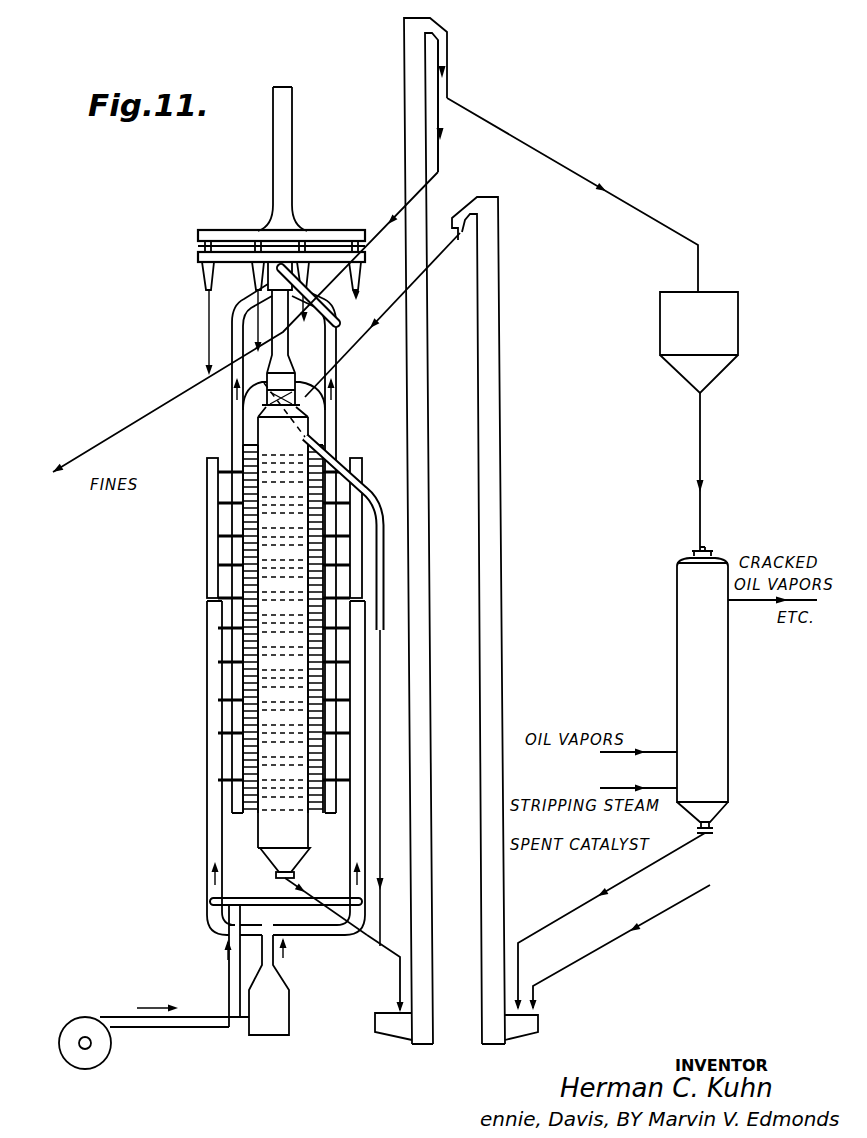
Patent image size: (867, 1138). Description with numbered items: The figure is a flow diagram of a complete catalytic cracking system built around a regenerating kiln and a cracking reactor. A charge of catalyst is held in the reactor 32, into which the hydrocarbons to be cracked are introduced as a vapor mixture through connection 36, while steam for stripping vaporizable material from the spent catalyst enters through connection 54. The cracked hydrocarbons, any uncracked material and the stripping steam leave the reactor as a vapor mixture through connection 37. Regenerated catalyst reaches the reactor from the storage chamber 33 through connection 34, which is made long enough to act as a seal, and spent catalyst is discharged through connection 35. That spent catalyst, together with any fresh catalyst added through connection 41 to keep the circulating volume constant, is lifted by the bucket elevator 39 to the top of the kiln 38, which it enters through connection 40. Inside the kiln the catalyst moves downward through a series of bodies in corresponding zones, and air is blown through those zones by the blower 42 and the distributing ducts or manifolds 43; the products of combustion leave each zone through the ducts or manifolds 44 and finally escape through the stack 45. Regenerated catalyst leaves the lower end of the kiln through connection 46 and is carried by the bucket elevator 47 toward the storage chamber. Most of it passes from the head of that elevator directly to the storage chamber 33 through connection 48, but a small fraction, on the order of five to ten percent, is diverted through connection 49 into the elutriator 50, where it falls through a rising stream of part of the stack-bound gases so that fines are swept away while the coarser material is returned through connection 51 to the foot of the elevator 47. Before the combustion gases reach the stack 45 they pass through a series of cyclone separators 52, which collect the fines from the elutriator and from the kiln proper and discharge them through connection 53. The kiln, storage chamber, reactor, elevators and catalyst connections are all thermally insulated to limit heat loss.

The reactor 32 is at (728, 690).
The storage chamber 33 is at (740, 328).
The connection 34 is at (702, 466).
The connection 35 is at (706, 840).
The connection 36 is at (612, 753).
The connection 37 is at (748, 604).
The kiln 38 is at (313, 840).
The bucket elevator 39 is at (499, 413).
The connection 40 is at (350, 350).
The connection 41 is at (688, 895).
The blower 42 is at (86, 1070).
The distributing ducts or manifolds 43 is at (208, 746).
The ducts or manifolds 44 is at (232, 440).
The stack 45 is at (273, 127).
The connection 46 is at (375, 936).
The bucket elevator 47 is at (426, 976).
The connection 48 is at (487, 121).
The connection 49 is at (438, 166).
The elutriator 50 is at (292, 347).
The connection 51 is at (373, 496).
The cyclone separators 52 is at (205, 276).
The connection 53 is at (123, 432).
The connection 54 is at (654, 786).